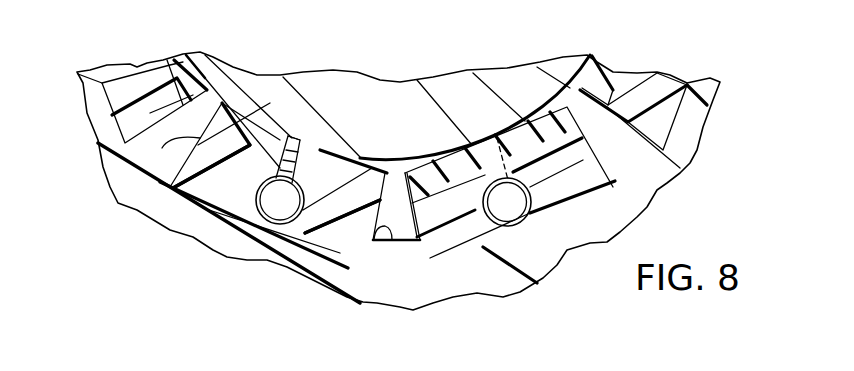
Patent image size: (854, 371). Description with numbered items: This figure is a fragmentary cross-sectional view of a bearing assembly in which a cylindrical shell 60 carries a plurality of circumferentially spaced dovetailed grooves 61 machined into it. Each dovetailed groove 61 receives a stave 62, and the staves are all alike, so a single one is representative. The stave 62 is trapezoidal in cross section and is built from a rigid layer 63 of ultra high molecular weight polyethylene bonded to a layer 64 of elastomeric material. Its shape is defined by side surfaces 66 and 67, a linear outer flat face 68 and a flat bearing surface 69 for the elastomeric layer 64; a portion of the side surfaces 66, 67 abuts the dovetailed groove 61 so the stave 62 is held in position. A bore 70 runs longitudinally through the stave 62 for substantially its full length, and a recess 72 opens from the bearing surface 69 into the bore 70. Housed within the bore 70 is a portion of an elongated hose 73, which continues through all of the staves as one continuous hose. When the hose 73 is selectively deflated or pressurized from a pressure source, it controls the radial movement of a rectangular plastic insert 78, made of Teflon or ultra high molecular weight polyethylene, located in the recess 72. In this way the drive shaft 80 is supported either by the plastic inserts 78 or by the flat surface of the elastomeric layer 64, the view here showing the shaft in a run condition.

The cylindrical shell 60 is at (410, 297).
The dovetailed groove 61 is at (370, 266).
The stave 62 is at (203, 205).
The rigid layer 63 is at (233, 200).
The layer of elastomeric material 64 is at (258, 128).
The side surface 66 is at (103, 182).
The side surface 67 is at (375, 229).
The outer flat face 68 is at (343, 257).
The flat bearing surface 69 is at (362, 158).
The bore 70 is at (293, 225).
The recess 72 is at (284, 172).
The hose 73 is at (317, 245).
The plastic insert 78 is at (288, 143).
The drive shaft 80 is at (437, 90).